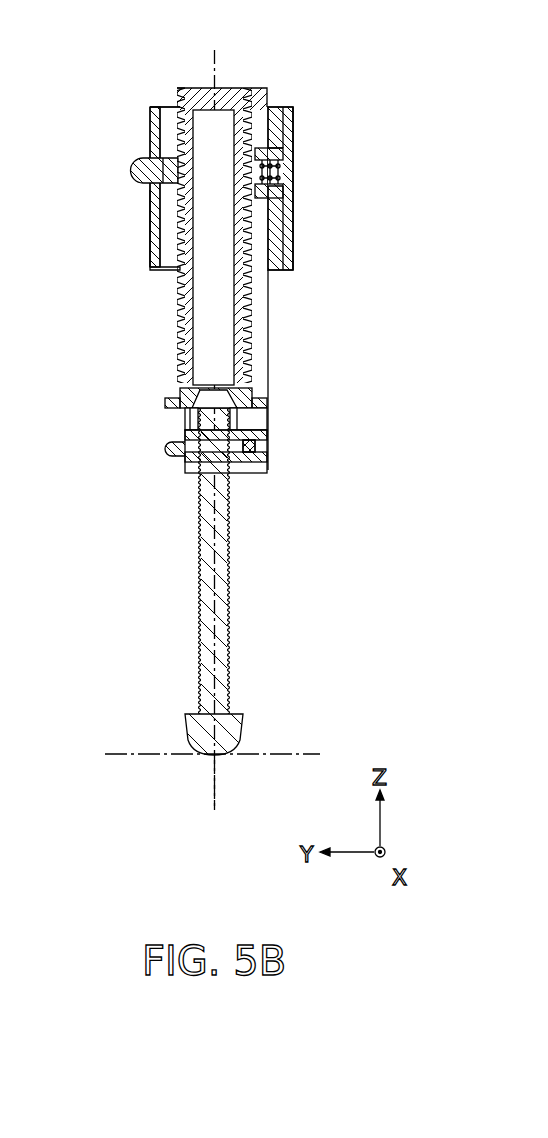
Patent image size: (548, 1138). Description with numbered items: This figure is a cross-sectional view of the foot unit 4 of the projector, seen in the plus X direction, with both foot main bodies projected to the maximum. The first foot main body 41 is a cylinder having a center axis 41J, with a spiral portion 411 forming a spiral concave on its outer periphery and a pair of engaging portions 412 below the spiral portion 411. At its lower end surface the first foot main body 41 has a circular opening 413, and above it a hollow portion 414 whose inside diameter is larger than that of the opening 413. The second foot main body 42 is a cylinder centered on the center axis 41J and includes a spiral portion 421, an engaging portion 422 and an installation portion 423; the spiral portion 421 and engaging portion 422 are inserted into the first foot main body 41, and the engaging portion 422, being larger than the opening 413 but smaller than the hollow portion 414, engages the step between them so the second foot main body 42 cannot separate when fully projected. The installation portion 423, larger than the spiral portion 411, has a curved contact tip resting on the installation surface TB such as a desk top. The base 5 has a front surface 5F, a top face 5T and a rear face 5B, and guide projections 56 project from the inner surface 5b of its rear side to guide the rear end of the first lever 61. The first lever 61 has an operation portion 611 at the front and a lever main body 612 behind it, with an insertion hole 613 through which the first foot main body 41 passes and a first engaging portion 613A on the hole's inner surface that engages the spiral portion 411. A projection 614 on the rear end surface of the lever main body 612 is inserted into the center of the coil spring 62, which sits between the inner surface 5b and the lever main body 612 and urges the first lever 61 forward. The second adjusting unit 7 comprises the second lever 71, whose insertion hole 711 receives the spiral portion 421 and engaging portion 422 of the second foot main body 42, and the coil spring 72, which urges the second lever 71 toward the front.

The foot unit 4 is at (298, 59).
The base 5 is at (312, 118).
The top face of holder 5T is at (173, 106).
The front surface 5F is at (150, 243).
The back face of holder 5B is at (294, 250).
The inner surface 5b is at (270, 272).
The first foot main body 41 is at (162, 312).
The spiral portion 411 is at (251, 318).
The hollow portion 414 is at (241, 340).
The opening 413 is at (196, 392).
The engaging portion 422 is at (238, 400).
The engaging portions 412 is at (236, 418).
The second foot main body 42 is at (249, 562).
The spiral portion 421 is at (232, 626).
The installation portion 423 is at (231, 730).
The second adjusting unit 7 is at (330, 447).
The second lever 71 is at (187, 457).
The insertion hole 711 is at (188, 429).
The coil spring 72 is at (268, 447).
The first lever 61 is at (122, 192).
The operation portion 611 is at (137, 172).
The insertion hole 613 is at (159, 153).
The first engaging portion 613A is at (229, 160).
The coil spring 62 is at (296, 216).
The lever main body 612 is at (290, 140).
The projection 614 is at (292, 198).
The guide projections 56 is at (292, 186).
The installation surface TB is at (134, 752).
The center axis 41J is at (218, 790).